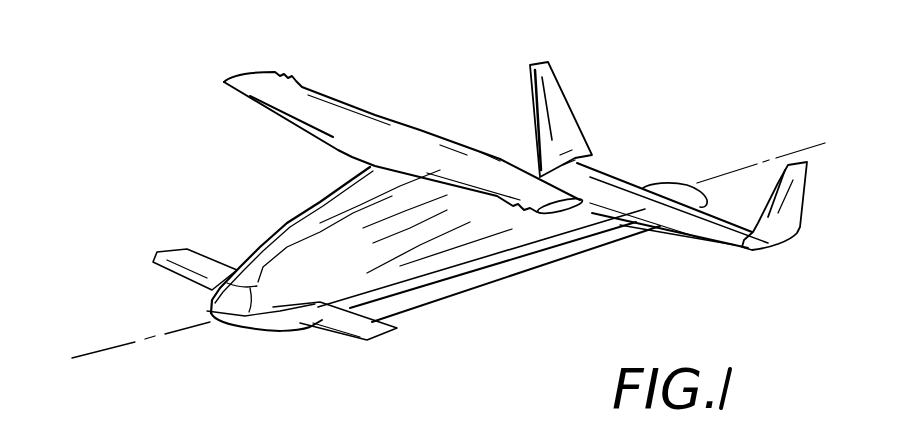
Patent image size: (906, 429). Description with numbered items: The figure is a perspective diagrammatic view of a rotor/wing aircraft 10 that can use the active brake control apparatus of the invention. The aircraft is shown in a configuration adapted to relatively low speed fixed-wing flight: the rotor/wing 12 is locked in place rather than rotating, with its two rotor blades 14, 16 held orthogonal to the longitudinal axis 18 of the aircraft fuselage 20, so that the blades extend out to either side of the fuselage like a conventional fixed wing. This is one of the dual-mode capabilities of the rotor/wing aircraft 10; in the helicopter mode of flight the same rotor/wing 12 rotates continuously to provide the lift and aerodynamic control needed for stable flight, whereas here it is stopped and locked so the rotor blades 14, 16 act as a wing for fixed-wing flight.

The rotor/wing aircraft 10 is at (435, 192).
The rotor/wing 12 is at (482, 150).
The rotor blade 14 is at (224, 77).
The rotor blade 16 is at (560, 212).
The longitudinal axis 18 is at (782, 150).
The aircraft fuselage 20 is at (430, 304).